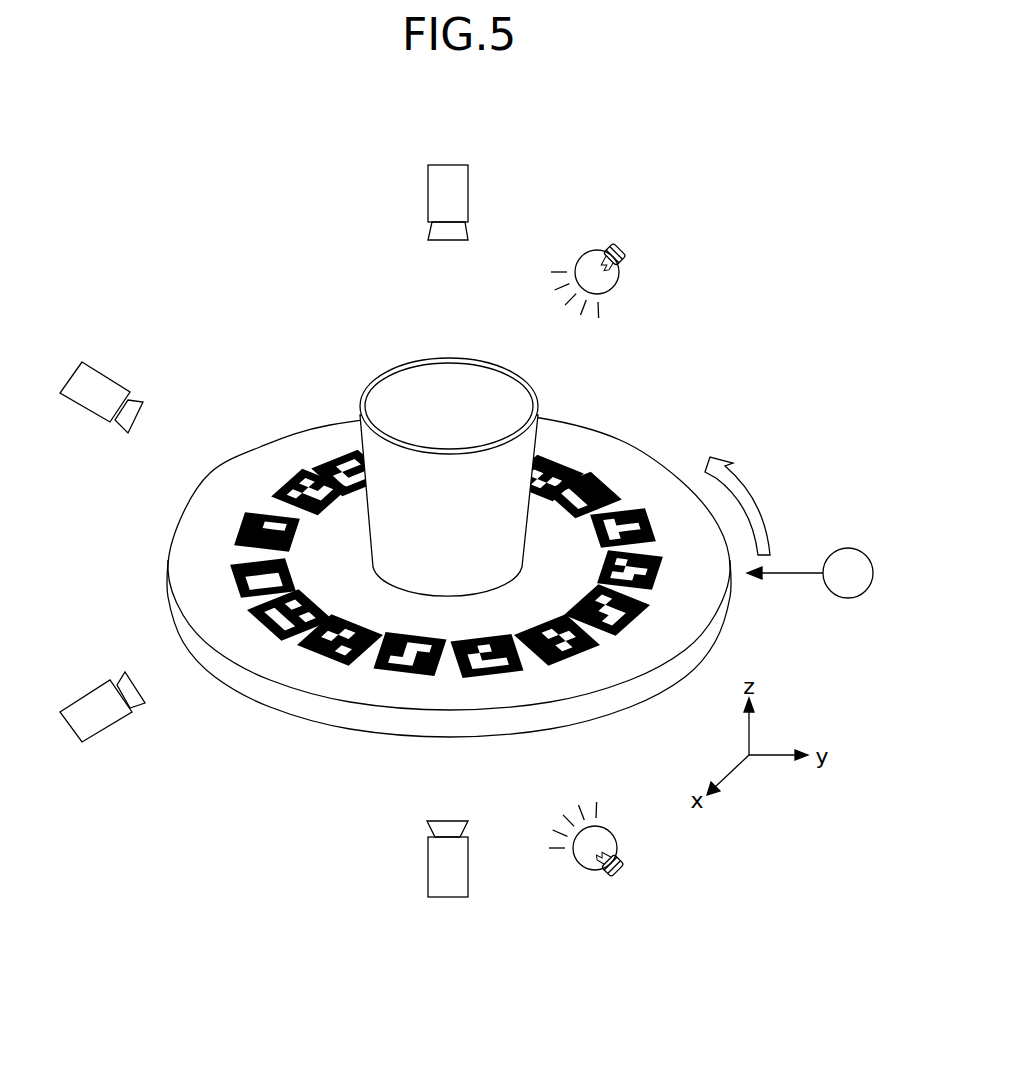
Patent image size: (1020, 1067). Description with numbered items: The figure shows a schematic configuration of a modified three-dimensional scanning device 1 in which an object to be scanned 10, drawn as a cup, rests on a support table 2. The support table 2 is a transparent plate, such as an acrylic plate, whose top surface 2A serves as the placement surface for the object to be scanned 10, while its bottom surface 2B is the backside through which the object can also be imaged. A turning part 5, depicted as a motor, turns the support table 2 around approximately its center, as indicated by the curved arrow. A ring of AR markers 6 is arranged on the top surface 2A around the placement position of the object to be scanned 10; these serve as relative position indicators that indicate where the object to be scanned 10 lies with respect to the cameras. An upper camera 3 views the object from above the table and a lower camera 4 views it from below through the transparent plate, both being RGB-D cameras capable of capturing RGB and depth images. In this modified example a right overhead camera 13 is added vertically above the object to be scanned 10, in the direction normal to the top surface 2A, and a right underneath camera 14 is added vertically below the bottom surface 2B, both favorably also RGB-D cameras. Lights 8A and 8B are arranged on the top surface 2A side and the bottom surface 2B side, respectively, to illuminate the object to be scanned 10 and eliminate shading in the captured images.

The three-dimensional scanning device 1 is at (254, 181).
The support table 2 is at (415, 572).
The top surface 2A is at (275, 465).
The bottom surface 2B is at (298, 690).
The upper camera 3 is at (84, 411).
The lower camera 4 is at (85, 698).
The turning part 5 is at (848, 548).
The AR markers 6 is at (578, 652).
The light 8A is at (620, 288).
The light 8B is at (617, 832).
The object to be scanned 10 is at (488, 364).
The right overhead camera 13 is at (428, 188).
The right underneath camera 14 is at (428, 864).